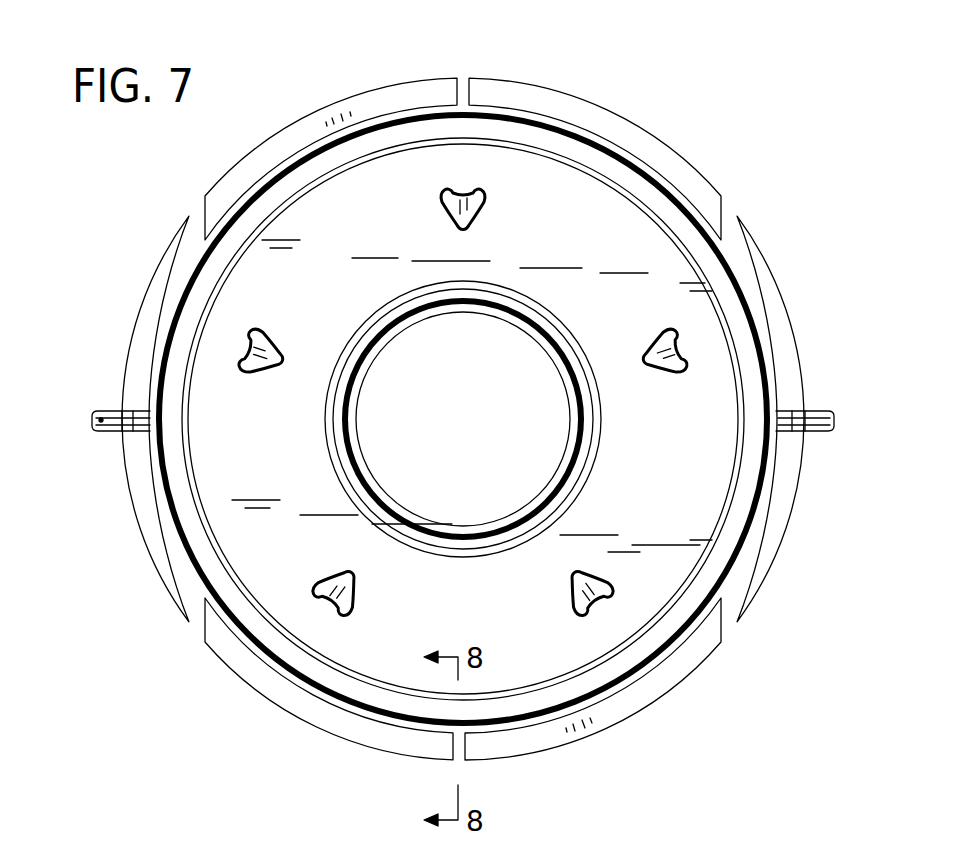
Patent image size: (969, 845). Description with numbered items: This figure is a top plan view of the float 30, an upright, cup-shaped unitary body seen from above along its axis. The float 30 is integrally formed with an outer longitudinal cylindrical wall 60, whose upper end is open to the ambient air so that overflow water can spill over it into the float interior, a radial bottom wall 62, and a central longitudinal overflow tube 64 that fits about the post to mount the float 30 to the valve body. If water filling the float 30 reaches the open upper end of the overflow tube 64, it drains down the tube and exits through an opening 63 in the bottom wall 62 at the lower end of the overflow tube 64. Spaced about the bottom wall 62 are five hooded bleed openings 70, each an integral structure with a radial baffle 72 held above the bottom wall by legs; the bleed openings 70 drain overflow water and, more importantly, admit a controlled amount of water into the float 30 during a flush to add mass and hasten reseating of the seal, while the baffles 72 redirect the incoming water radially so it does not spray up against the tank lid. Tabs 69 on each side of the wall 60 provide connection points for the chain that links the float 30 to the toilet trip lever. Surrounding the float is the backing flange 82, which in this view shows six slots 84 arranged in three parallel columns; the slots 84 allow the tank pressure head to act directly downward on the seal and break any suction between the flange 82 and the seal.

The float 30 is at (814, 243).
The outer longitudinal cylindrical wall 60 is at (776, 480).
The radial bottom wall 62 is at (660, 505).
The opening 63 is at (470, 313).
The central longitudinal overflow tube 64 is at (555, 314).
The tabs 69 is at (95, 420).
The hooded bleed openings 70 is at (492, 220).
The radial baffle 72 is at (478, 194).
The backing flange 82 is at (600, 122).
The slots 84 is at (463, 88).